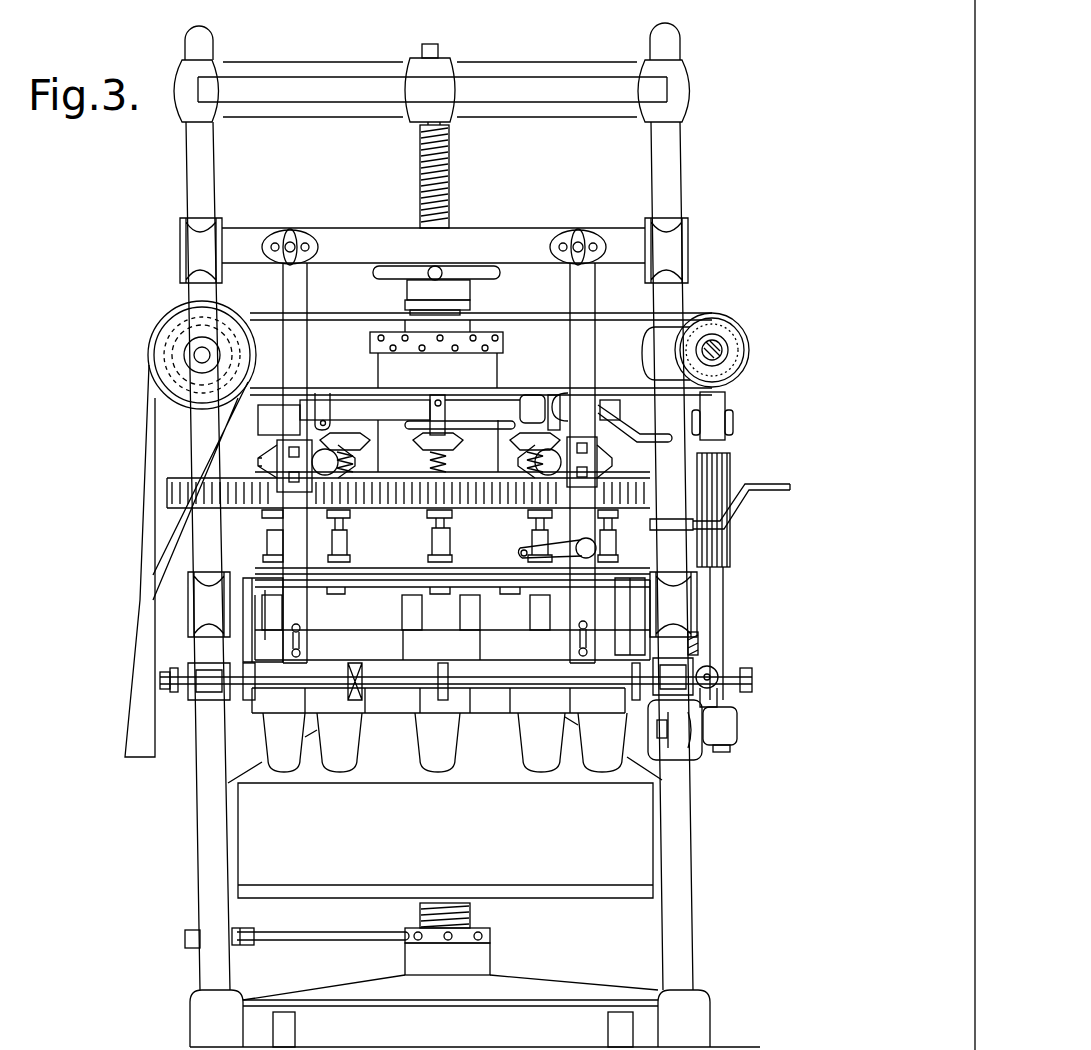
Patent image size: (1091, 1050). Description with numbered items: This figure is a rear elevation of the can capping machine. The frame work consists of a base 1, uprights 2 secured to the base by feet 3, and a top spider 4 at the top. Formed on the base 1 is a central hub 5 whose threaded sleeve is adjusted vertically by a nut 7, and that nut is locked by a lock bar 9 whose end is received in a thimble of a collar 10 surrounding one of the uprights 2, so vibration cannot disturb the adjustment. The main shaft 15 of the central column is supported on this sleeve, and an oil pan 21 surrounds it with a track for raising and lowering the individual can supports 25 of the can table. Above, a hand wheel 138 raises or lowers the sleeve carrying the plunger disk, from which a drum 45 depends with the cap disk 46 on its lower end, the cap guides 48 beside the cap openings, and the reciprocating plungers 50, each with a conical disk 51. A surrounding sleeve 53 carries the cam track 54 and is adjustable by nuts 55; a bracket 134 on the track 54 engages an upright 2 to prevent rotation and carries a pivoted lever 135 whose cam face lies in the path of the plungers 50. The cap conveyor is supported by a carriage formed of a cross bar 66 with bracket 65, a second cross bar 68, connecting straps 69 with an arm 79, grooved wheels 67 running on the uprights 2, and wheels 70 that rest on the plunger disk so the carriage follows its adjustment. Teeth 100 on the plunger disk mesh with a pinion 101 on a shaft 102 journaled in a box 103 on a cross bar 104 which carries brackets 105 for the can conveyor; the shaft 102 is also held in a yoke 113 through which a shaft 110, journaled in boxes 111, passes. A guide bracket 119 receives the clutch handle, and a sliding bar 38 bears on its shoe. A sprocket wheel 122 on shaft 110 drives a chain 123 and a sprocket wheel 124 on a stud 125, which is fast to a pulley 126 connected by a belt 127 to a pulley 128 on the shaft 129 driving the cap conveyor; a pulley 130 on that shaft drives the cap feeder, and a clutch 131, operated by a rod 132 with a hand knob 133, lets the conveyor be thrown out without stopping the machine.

The base 1 is at (475, 1023).
The uprights 2 is at (439, 506).
The feet 3 is at (450, 1018).
The top spider 4 is at (525, 80).
The central hub 5 is at (450, 951).
The nut 7 is at (491, 936).
The lock bar 9 is at (364, 932).
The collar 10 is at (194, 930).
The main shaft 15 is at (428, 192).
The oil pan 21 is at (543, 903).
The can supports 25 is at (438, 699).
The sliding bar 38 is at (700, 645).
The drum 45 is at (542, 536).
The cap disk 46 is at (385, 598).
The cap guides 48 is at (440, 566).
The plunger 50 is at (330, 547).
The disk 51 is at (452, 440).
The sleeve 53 is at (441, 396).
The track 54 is at (388, 415).
The nuts 55 is at (498, 337).
The bracket 65 is at (470, 612).
The cross bar 66 is at (452, 620).
The grooved wheels 67 is at (438, 427).
The second cross bar 68 is at (433, 246).
The straps 69 is at (439, 463).
The wheels 70 is at (315, 478).
The arm 79 is at (545, 551).
The teeth 100 is at (402, 500).
The pinion 101 is at (727, 535).
The shaft 102 is at (722, 605).
The box 103 is at (735, 732).
The cross bar 104 is at (700, 745).
The brackets 105 is at (718, 700).
The shaft 110 is at (722, 342).
The boxes 111 is at (666, 353).
The yoke 113 is at (722, 406).
The guide bracket 119 is at (740, 506).
The sprocket wheel 122 is at (735, 352).
The sprocket chain 123 is at (495, 314).
The sprocket wheel 124 is at (165, 336).
The stud 125 is at (200, 356).
The pulley 126 is at (172, 385).
The belt 127 is at (147, 458).
The pulley 128 is at (125, 720).
The shaft 129 is at (166, 698).
The pulley 130 is at (357, 668).
The clutch 131 is at (174, 668).
The rod 132 is at (388, 688).
The hand knob 133 is at (754, 678).
The bracket 134 is at (640, 425).
The lever 135 is at (525, 415).
The hand wheel 138 is at (405, 285).